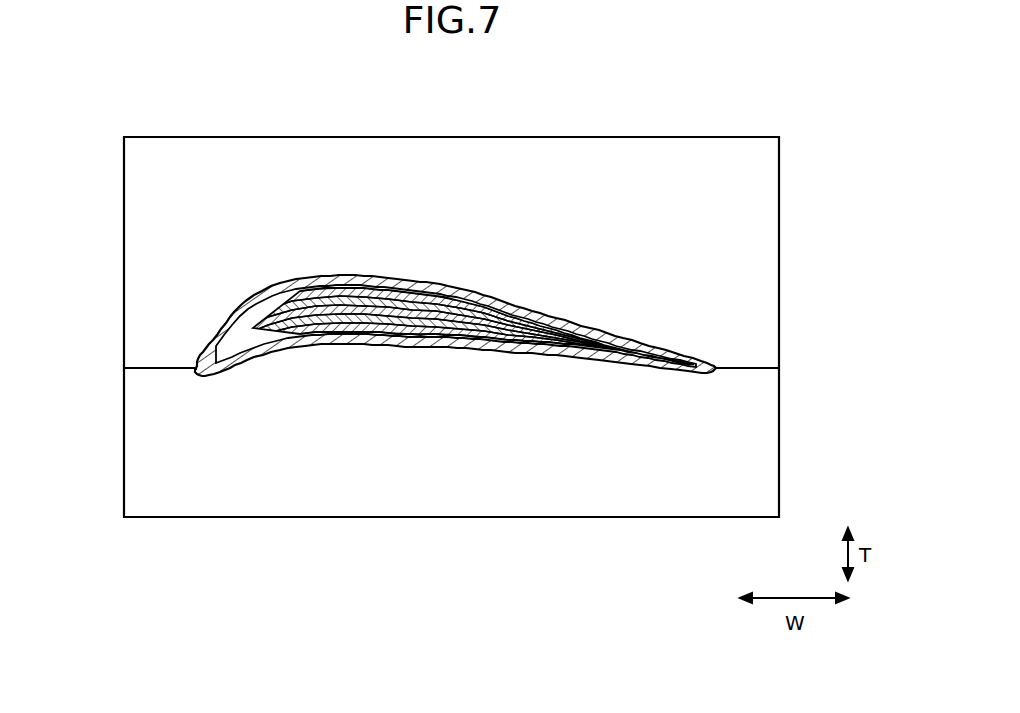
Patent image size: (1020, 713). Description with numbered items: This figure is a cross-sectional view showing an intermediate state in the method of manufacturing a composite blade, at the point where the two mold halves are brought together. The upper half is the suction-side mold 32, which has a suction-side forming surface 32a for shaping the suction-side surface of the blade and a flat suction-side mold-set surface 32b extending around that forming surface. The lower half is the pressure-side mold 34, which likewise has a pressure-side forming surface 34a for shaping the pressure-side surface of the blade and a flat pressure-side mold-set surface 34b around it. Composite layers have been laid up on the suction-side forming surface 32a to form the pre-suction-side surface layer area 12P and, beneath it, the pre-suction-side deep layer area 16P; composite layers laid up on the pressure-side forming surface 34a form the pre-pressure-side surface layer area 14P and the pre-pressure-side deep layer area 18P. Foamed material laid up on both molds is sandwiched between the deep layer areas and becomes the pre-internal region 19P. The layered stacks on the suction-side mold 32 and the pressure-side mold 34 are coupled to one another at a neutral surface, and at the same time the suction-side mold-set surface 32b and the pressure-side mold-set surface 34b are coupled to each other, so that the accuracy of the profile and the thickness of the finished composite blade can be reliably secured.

The suction-side mold 32 is at (737, 148).
The pressure-side mold 34 is at (737, 505).
The suction-side forming surface 32a is at (272, 297).
The pressure-side forming surface 34a is at (590, 352).
The suction-side mold-set surface 32b is at (145, 368).
The pressure-side mold-set surface 34b is at (758, 368).
The pre-suction-side surface layer area 12P is at (421, 300).
The pre-pressure-side surface layer area 14P is at (352, 340).
The pre-suction-side deep layer area 16P is at (350, 288).
The pre-pressure-side deep layer area 18P is at (425, 332).
The pre-internal region 19P is at (493, 325).